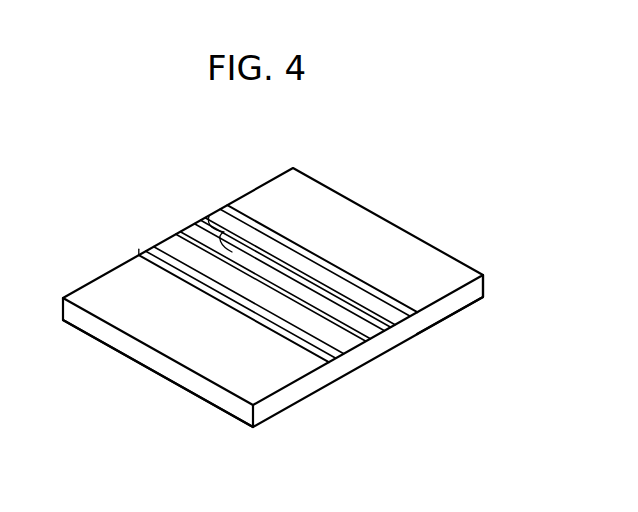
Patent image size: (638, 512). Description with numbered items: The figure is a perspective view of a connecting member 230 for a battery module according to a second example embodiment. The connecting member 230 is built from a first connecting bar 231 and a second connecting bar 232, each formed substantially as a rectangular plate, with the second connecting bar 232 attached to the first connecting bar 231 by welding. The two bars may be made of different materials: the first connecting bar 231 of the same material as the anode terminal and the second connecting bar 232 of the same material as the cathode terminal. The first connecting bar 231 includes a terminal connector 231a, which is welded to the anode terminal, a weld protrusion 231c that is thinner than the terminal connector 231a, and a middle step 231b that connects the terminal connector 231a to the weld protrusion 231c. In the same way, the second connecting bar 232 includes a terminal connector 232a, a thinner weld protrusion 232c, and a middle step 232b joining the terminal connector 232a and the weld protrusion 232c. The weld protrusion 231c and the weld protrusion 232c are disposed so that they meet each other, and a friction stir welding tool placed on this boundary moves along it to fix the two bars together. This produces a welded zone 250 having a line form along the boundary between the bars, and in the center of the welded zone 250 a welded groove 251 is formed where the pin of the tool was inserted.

The connecting member 230 is at (117, 270).
The first connecting bar 231 is at (137, 320).
The terminal connector 231a is at (273, 378).
The middle step 231b is at (343, 364).
The weld protrusion 231c is at (363, 362).
The second connecting bar 232 is at (315, 196).
The terminal connector 232a is at (447, 285).
The middle step 232b is at (422, 305).
The weld protrusion 232c is at (400, 327).
The welded zone 250 is at (223, 228).
The welded groove 251 is at (187, 248).